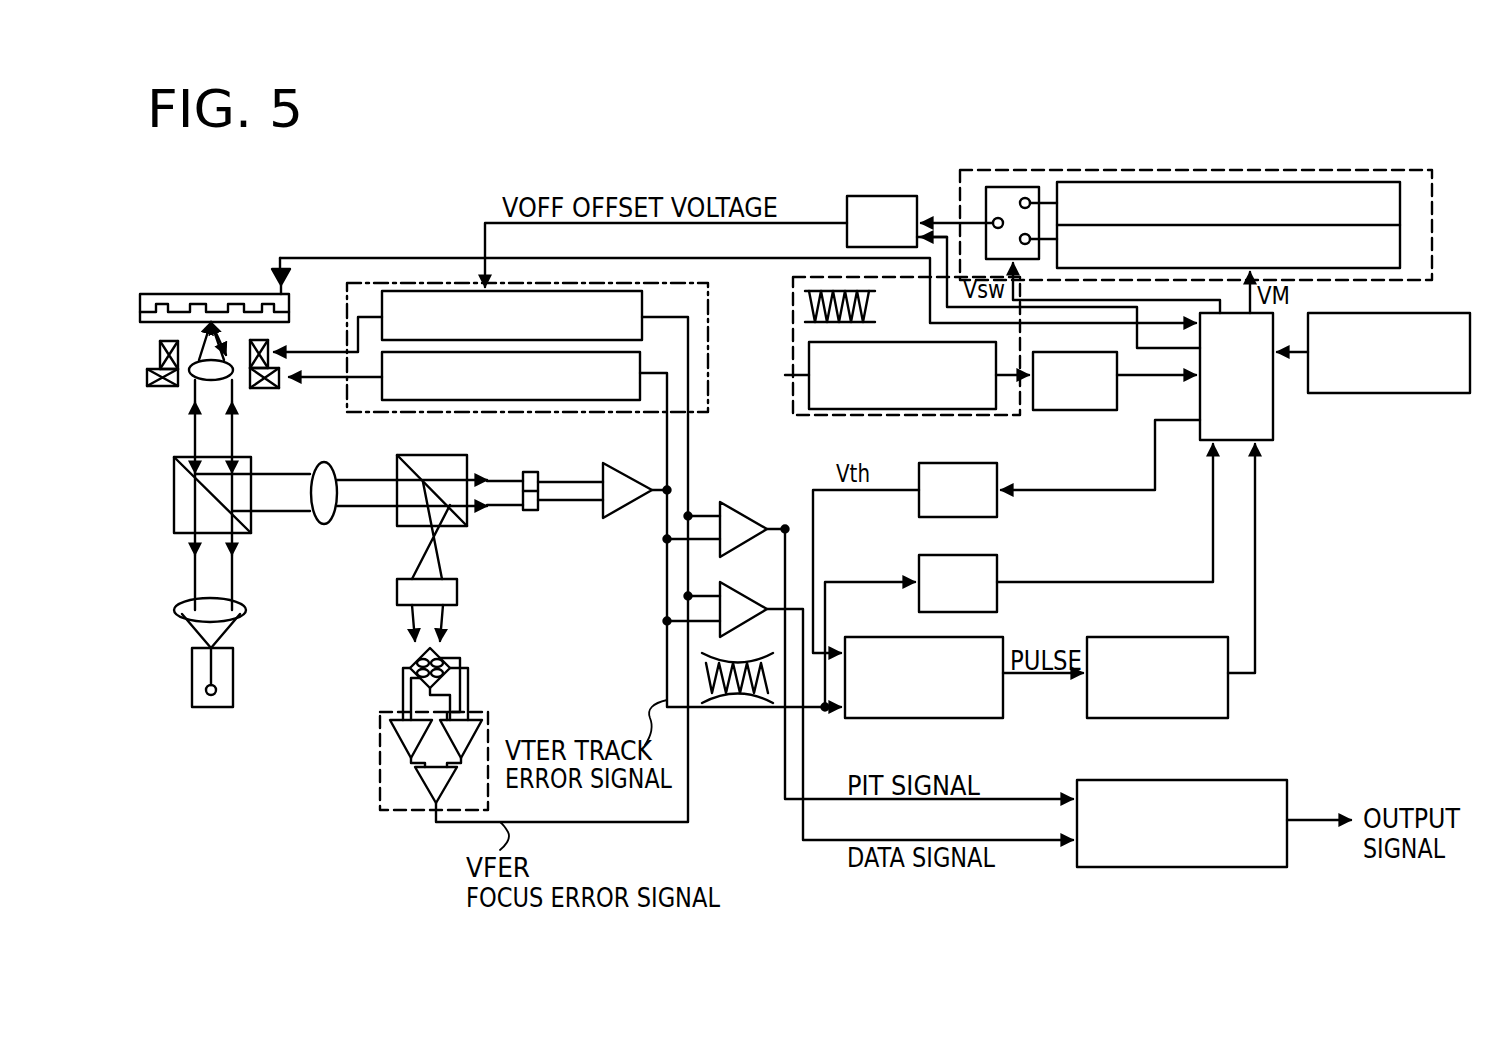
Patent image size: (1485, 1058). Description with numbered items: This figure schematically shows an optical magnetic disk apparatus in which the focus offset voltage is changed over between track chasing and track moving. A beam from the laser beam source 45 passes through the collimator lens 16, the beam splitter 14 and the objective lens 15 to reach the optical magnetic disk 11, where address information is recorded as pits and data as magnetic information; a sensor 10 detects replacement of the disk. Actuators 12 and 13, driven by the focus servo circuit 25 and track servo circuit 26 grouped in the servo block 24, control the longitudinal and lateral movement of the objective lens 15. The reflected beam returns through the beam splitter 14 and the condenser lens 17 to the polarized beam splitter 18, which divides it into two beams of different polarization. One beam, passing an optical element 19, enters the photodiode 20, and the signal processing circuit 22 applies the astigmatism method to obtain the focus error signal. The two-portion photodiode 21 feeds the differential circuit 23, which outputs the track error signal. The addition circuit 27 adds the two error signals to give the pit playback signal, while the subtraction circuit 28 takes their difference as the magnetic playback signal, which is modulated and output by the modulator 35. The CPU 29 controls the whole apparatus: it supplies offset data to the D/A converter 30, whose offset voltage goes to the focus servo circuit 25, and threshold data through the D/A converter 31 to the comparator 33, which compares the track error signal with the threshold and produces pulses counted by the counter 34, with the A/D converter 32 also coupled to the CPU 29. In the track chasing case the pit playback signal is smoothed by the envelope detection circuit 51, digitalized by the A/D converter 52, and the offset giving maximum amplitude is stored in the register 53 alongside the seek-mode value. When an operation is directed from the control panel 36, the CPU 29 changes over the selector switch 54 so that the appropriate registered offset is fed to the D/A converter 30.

The sensor 10 is at (272, 272).
The optical magnetic disk 11 is at (160, 294).
The actuator 12 is at (160, 352).
The actuator 13 is at (155, 386).
The beam splitter 14 is at (174, 475).
The objective lens 15 is at (232, 372).
The collimator lens 16 is at (247, 610).
The condenser lens 17 is at (318, 464).
The polarized beam splitter 18 is at (460, 523).
The cylindrical lens 19 is at (457, 592).
The photodiode 20 is at (412, 668).
The photodiode 21 is at (530, 472).
The signal processing circuit 22 is at (488, 712).
The differential circuit 23 is at (625, 463).
The servo circuit 24 is at (708, 283).
The focus servo circuit 25 is at (642, 302).
The track servo circuit 26 is at (420, 400).
The addition circuit 27 is at (738, 504).
The subtraction circuit 28 is at (746, 584).
The CPU 29 is at (1273, 425).
The D/A converter 30 is at (882, 196).
The D/A converter 31 is at (997, 507).
The A/D converter 32 is at (997, 555).
The comparator 33 is at (890, 637).
The counter 34 is at (1163, 637).
The modulator 35 is at (1270, 780).
The control panel 36 is at (1407, 393).
The laser beam source 45 is at (205, 707).
The envelope detection circuit 51 is at (938, 409).
The A/D converter 52 is at (1103, 410).
The register 53 is at (1165, 170).
The selector switch 54 is at (1012, 187).